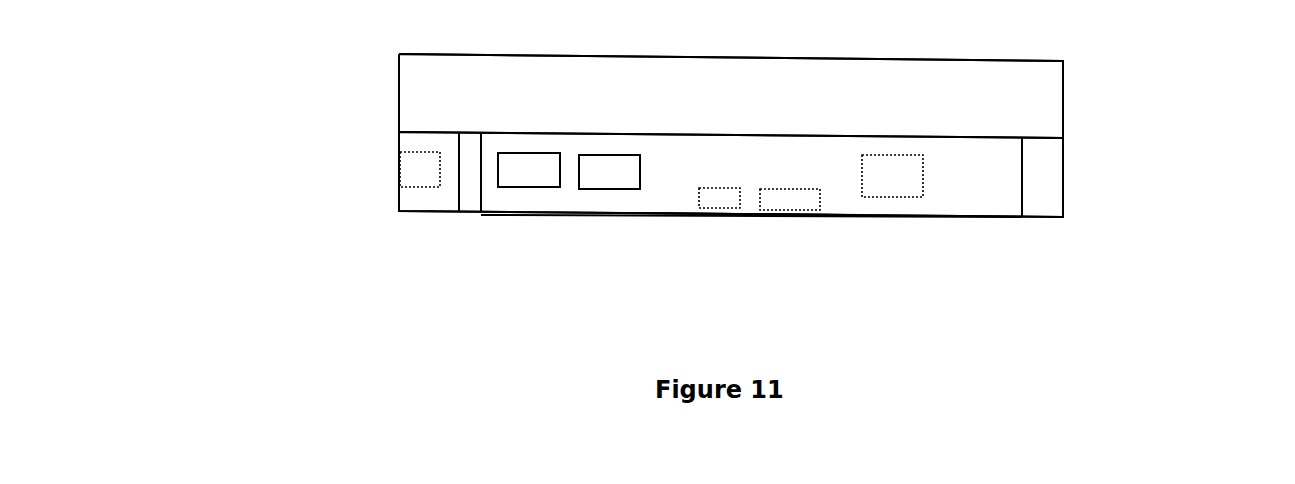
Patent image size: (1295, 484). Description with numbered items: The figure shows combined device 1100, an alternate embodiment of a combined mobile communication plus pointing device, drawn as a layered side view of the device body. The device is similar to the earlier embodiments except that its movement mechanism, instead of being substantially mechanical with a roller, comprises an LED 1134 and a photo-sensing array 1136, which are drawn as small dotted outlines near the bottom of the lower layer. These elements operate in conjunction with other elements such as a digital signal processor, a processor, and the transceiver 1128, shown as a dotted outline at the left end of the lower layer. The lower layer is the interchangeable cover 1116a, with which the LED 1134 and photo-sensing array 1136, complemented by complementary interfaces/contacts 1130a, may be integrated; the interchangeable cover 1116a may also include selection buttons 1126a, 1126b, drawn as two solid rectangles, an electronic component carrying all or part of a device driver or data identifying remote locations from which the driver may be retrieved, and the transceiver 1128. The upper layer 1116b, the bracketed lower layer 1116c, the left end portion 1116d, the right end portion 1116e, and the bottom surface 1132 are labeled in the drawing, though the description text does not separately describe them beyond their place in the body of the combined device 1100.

The combined device 1100 is at (275, 107).
The interchangeable cover 1116a is at (962, 173).
The upper substrate layer 1116b is at (1042, 117).
The lower substrate layer 1116c is at (1133, 153).
The left end portion 1116d is at (417, 205).
The right end portion 1116e is at (1042, 173).
The selection button 1126a is at (540, 168).
The selection button 1126b is at (618, 168).
The transceiver 1128 is at (408, 172).
The complementary interfaces/contacts 1130a is at (882, 172).
The bottom surface 1132 is at (717, 227).
The LED 1134 is at (727, 197).
The photo-sensing array 1136 is at (783, 187).